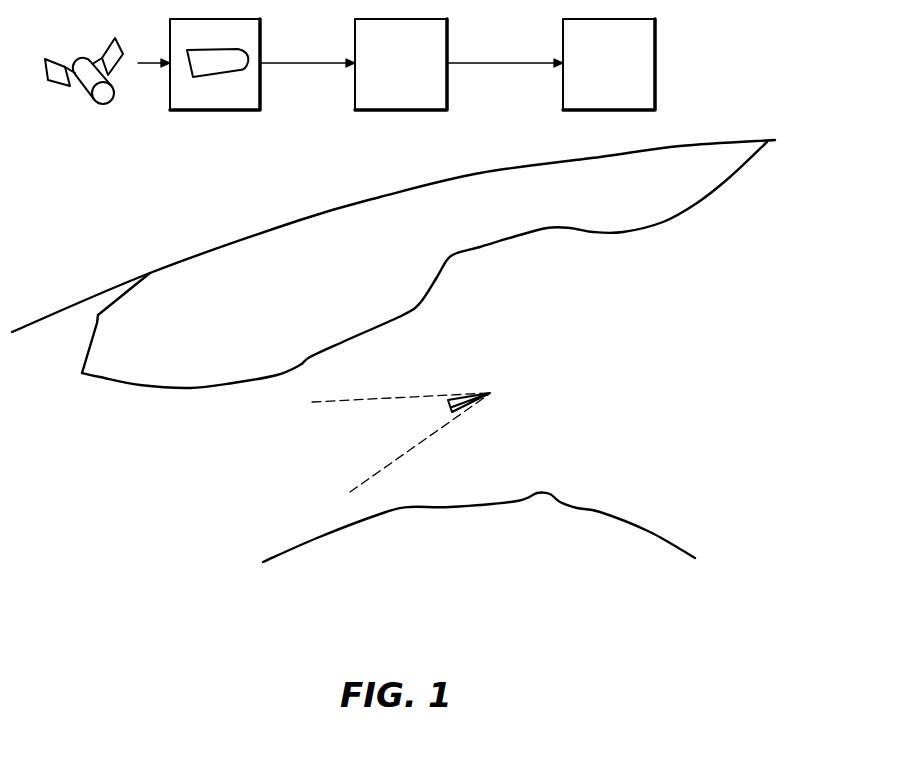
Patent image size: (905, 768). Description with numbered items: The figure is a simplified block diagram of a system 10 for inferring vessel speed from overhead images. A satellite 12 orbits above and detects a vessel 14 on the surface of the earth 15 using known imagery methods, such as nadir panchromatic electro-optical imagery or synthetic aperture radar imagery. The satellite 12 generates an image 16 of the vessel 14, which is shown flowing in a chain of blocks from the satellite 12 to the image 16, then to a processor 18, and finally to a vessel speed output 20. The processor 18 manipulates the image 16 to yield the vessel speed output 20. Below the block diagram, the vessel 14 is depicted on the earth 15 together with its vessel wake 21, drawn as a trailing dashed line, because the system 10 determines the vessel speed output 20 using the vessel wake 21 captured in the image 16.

The system 10 is at (130, 222).
The satellite 12 is at (103, 95).
The vessel 14 is at (462, 397).
The earth 15 is at (626, 382).
The image 16 is at (213, 98).
The processor 18 is at (390, 98).
The vessel speed output 20 is at (575, 98).
The vessel wake 21 is at (383, 398).